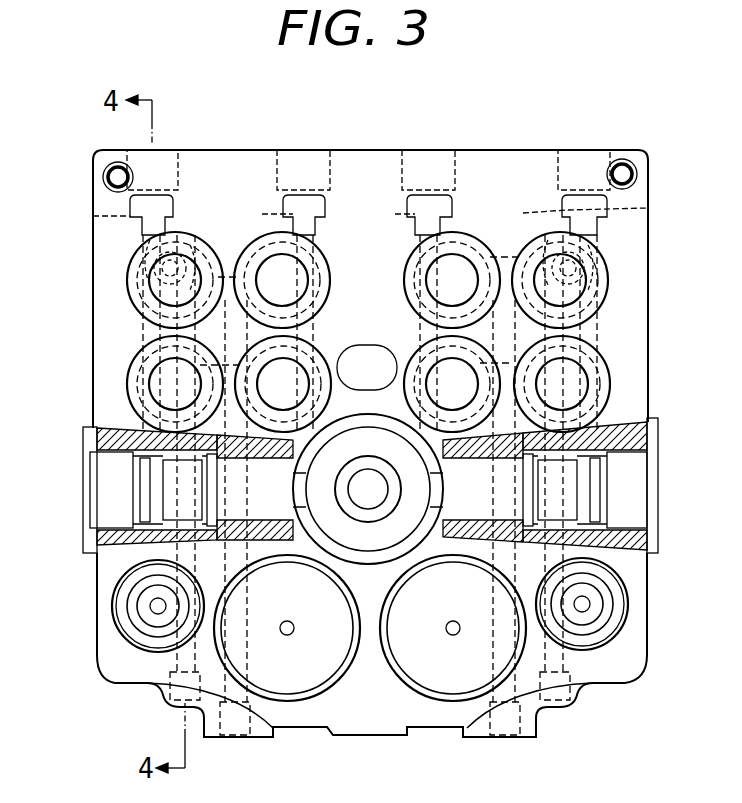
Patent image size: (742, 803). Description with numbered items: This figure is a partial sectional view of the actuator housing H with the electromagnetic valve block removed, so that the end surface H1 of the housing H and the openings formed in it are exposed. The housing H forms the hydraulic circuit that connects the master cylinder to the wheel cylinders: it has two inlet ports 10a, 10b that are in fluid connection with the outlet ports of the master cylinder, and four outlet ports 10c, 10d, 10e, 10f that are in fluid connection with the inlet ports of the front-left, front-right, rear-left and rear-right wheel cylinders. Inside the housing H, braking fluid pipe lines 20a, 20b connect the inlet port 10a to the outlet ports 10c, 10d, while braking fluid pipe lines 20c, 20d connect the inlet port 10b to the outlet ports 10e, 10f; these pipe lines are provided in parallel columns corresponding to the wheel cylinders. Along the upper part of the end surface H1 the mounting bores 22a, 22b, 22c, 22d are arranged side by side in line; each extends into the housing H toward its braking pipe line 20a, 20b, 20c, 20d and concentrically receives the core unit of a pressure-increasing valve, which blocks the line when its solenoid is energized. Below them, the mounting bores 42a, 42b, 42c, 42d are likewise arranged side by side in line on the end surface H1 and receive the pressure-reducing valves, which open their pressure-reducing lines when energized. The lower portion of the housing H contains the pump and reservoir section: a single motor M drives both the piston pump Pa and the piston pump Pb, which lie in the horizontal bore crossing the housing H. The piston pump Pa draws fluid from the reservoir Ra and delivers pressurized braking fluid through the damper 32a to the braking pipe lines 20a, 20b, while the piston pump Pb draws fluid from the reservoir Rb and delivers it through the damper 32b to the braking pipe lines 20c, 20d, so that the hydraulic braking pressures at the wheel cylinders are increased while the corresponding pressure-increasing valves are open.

The housing H is at (559, 716).
The end surface H1 is at (253, 167).
The inlet port 10a is at (180, 250).
The inlet port 10b is at (580, 250).
The outlet port 10c is at (174, 150).
The outlet port 10d is at (317, 148).
The outlet port 10e is at (447, 148).
The outlet port 10f is at (568, 148).
The braking fluid pipe line 20a is at (93, 217).
The braking fluid pipe line 20b is at (256, 217).
The braking fluid pipe line 20c is at (385, 217).
The braking fluid pipe line 20d is at (565, 213).
The mounting bore 22a is at (127, 290).
The mounting bore 22b is at (318, 246).
The mounting bore 22c is at (455, 237).
The mounting bore 22d is at (608, 280).
The mounting bore 42a is at (127, 385).
The mounting bore 42b is at (243, 352).
The mounting bore 42c is at (493, 345).
The mounting bore 42d is at (610, 372).
The damper 32a is at (122, 606).
The damper 32b is at (618, 602).
The piston pump Pa is at (112, 502).
The piston pump Pb is at (628, 502).
The reservoir Ra is at (281, 677).
The reservoir Rb is at (472, 670).
The motor M is at (371, 497).